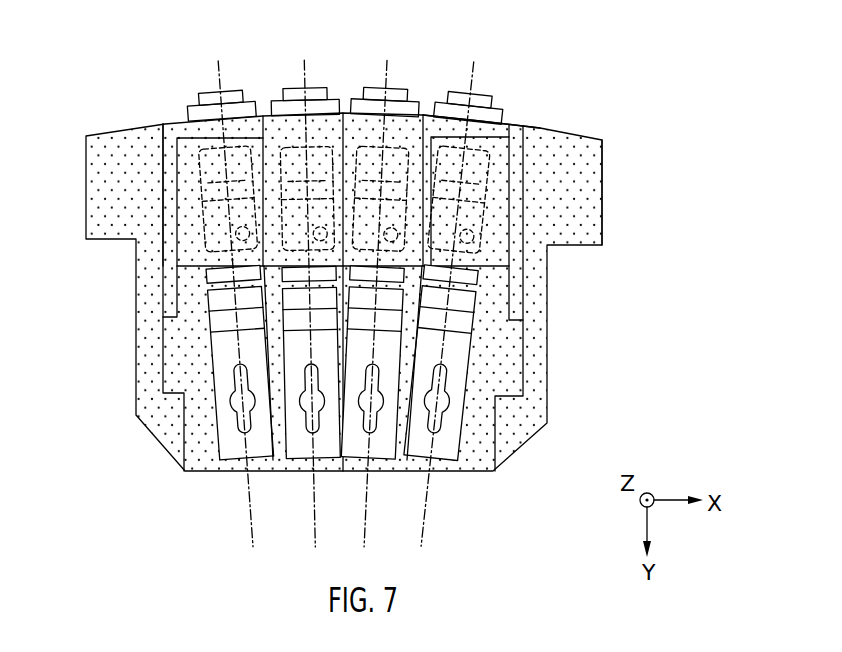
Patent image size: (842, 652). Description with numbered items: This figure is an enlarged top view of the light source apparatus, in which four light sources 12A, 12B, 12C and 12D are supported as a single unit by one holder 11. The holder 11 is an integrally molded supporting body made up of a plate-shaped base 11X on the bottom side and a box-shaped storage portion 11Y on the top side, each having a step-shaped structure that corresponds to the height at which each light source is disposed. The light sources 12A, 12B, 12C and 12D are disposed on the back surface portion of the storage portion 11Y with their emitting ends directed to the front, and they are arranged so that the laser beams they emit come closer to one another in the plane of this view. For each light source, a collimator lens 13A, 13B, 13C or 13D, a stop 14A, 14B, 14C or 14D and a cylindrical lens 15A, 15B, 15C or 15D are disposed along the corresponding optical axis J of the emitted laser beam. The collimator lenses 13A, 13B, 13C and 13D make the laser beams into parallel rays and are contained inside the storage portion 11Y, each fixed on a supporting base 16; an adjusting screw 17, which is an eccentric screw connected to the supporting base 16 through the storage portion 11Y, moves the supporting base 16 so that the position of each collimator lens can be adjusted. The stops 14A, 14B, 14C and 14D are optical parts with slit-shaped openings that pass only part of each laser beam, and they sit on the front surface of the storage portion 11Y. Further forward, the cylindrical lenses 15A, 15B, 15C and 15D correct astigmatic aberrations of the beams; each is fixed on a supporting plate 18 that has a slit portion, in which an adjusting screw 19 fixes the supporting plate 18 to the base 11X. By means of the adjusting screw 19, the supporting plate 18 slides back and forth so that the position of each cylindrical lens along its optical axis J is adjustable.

The holder 11 is at (657, 96).
The base 11X is at (568, 145).
The storage portion 11Y is at (193, 193).
The light source 12A is at (208, 91).
The light source 12B is at (297, 88).
The light source 12C is at (397, 88).
The light source 12D is at (483, 95).
The collimator lens 13A is at (197, 150).
The collimator lens 13B is at (266, 108).
The collimator lens 13C is at (362, 115).
The collimator lens 13D is at (440, 130).
The stop 14A is at (208, 278).
The stop 14B is at (300, 266).
The stop 14C is at (392, 268).
The stop 14D is at (475, 287).
The cylindrical lens 15A is at (222, 322).
The cylindrical lens 15B is at (297, 318).
The cylindrical lens 15C is at (387, 317).
The cylindrical lens 15D is at (460, 327).
The supporting base 16 is at (482, 133).
The adjusting screw 17 is at (493, 200).
The supporting plate 18 is at (230, 438).
The adjusting screw 19 is at (230, 400).
The optical axis J is at (244, 506).